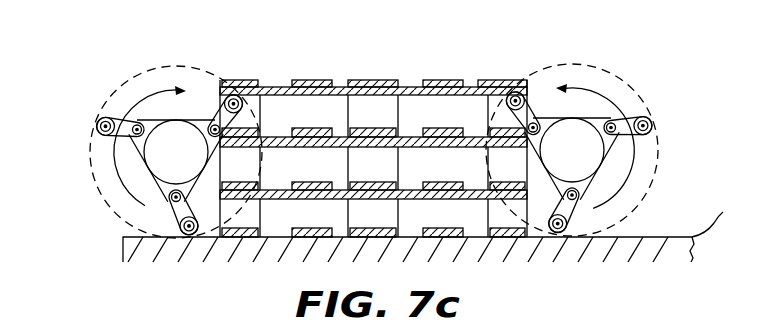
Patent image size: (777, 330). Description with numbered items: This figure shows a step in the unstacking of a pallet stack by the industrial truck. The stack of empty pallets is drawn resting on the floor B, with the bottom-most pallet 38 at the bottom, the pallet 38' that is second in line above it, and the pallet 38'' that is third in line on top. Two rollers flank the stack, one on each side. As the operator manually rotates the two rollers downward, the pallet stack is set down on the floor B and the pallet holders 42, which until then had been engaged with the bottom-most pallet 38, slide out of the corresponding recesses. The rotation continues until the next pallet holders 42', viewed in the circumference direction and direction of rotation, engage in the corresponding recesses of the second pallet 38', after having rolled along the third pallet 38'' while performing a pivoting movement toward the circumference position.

The bottom-most pallet 38 is at (373, 244).
The second pallet 38' is at (373, 163).
The third pallet 38'' is at (373, 77).
The pallet holders 42 is at (390, 212).
The next pallet holders 42' is at (386, 82).
The floor B is at (430, 229).